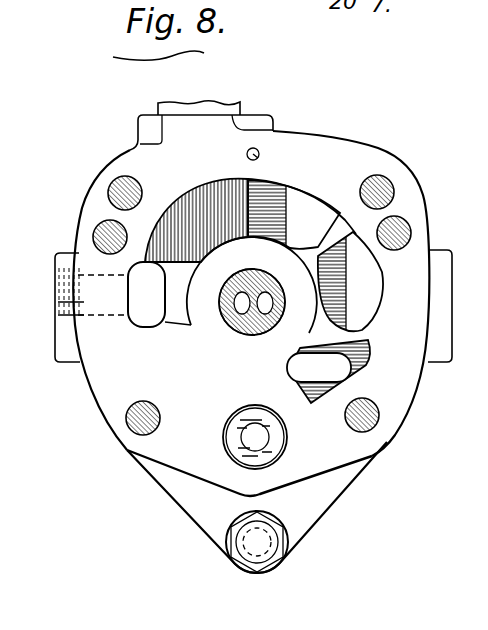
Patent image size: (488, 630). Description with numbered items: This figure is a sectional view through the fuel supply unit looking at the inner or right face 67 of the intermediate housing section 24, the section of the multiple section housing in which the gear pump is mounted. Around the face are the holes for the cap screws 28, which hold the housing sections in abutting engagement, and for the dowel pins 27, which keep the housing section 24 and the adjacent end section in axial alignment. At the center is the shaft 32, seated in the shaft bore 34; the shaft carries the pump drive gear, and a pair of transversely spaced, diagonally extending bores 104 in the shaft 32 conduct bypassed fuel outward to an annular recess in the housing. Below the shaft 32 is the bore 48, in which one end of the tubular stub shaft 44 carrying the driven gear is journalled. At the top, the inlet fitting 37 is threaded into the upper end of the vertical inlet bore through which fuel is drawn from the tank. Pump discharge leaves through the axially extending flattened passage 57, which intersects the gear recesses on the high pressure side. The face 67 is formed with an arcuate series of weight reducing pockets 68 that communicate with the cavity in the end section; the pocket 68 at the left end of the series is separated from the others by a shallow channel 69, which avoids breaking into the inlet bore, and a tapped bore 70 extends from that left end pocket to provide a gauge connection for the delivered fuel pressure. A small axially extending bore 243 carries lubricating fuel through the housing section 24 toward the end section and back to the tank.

The intermediate housing section 24 is at (338, 140).
The dowel pins 27 is at (97, 226).
The cap screws 28 is at (115, 180).
The shaft 32 is at (258, 333).
The shaft bore 34 is at (229, 318).
The inlet fitting 37 is at (244, 110).
The tubular stub shaft 44 is at (275, 442).
The bore 48 is at (232, 443).
The flattened passage 57 is at (306, 373).
The inner face of housing section 67 is at (207, 393).
The weight reducing pockets 68 is at (307, 200).
The shallow channel 69 is at (190, 208).
The tapped bore 70 is at (53, 307).
The diagonally extending bores 104 is at (263, 291).
The axially extending bore 243 is at (259, 156).